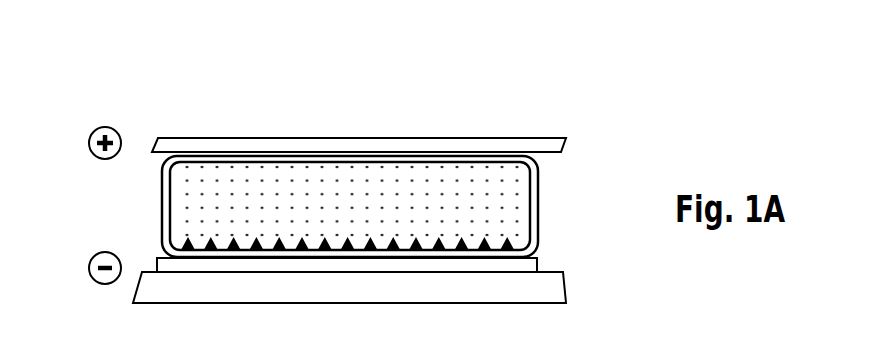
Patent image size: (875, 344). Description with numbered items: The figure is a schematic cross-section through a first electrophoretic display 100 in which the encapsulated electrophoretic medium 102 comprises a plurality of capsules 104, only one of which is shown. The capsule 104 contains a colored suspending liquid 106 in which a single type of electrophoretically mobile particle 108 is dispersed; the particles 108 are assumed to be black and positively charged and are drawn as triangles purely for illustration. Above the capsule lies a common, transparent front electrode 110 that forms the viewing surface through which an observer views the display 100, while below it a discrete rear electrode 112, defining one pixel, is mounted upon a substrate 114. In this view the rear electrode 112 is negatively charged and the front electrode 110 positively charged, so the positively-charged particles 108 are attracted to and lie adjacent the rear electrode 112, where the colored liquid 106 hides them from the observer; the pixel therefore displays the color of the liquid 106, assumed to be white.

The electrophoretic display 100 is at (203, 125).
The encapsulated electrophoretic medium 102 is at (558, 176).
The capsule 104 is at (538, 215).
The suspending liquid 106 is at (458, 212).
The particle 108 is at (326, 243).
The front electrode 110 is at (383, 137).
The rear electrode 112 is at (538, 262).
The substrate 114 is at (563, 287).